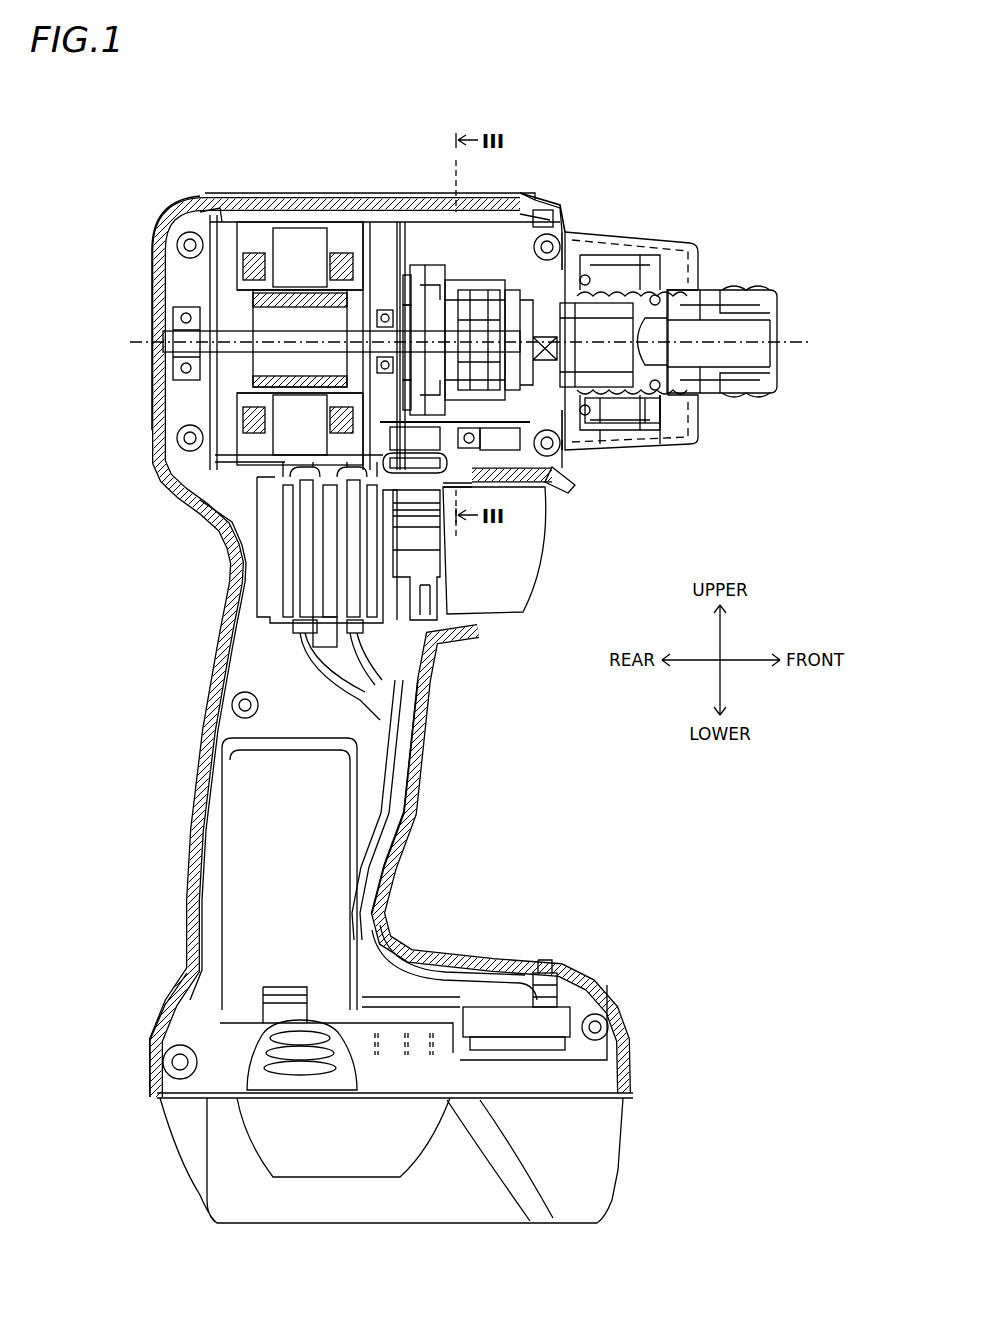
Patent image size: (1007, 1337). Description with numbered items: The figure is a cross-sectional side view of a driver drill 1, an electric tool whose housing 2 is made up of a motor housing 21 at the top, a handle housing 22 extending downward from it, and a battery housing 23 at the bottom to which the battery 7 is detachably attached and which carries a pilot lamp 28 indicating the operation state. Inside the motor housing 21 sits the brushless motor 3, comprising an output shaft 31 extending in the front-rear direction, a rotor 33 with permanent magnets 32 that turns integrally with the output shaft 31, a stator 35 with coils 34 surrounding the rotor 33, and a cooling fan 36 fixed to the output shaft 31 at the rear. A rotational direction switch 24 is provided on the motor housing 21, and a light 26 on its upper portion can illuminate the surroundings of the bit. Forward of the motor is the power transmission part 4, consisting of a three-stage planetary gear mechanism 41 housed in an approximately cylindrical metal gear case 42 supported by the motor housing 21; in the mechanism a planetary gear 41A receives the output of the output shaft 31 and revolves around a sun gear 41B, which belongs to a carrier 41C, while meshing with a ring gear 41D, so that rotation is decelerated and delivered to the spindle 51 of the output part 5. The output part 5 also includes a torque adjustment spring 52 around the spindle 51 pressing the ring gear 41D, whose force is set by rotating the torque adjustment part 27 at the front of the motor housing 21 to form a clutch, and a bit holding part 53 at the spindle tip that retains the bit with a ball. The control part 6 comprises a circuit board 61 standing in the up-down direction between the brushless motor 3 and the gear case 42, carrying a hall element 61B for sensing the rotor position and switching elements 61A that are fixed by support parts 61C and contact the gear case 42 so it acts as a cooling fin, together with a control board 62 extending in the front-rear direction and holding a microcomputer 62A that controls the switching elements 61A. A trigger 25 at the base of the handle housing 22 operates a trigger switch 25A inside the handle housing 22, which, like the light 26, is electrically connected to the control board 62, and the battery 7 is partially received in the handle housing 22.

The driver drill 1 is at (687, 177).
The housing 2 is at (236, 200).
The brushless motor 3 is at (324, 264).
The power transmission part 4 is at (578, 240).
The output part 5 is at (644, 265).
The control part 6 is at (376, 245).
The battery 7 is at (572, 1141).
The motor housing 21 is at (553, 200).
The handle housing 22 is at (413, 742).
The battery housing 23 is at (445, 958).
The rotational direction switch 24 is at (443, 462).
The trigger 25 is at (497, 583).
The trigger switch 25A is at (323, 567).
The light 26 is at (567, 218).
The torque adjustment part 27 is at (650, 458).
The pilot lamp 28 is at (542, 960).
The output shaft 31 is at (158, 232).
The permanent magnets 32 is at (272, 300).
The rotor 33 is at (283, 222).
The coils 34 is at (250, 222).
The stator 35 is at (312, 222).
The cooling fan 36 is at (212, 214).
The planetary gear mechanism 41 is at (476, 250).
The planetary gear 41A is at (452, 290).
The sun gear 41B is at (478, 290).
The carrier 41C is at (532, 264).
The ring gear 41D is at (445, 260).
The gear case 42 is at (568, 455).
The spindle 51 is at (722, 322).
The torque adjustment spring 52 is at (605, 425).
The bit holding part 53 is at (757, 292).
The circuit board 61 is at (362, 300).
The switching element 61A is at (476, 483).
The hall element 61B is at (362, 298).
The support part 61C is at (293, 480).
The control board 62 is at (382, 285).
The microcomputer 62A is at (402, 258).